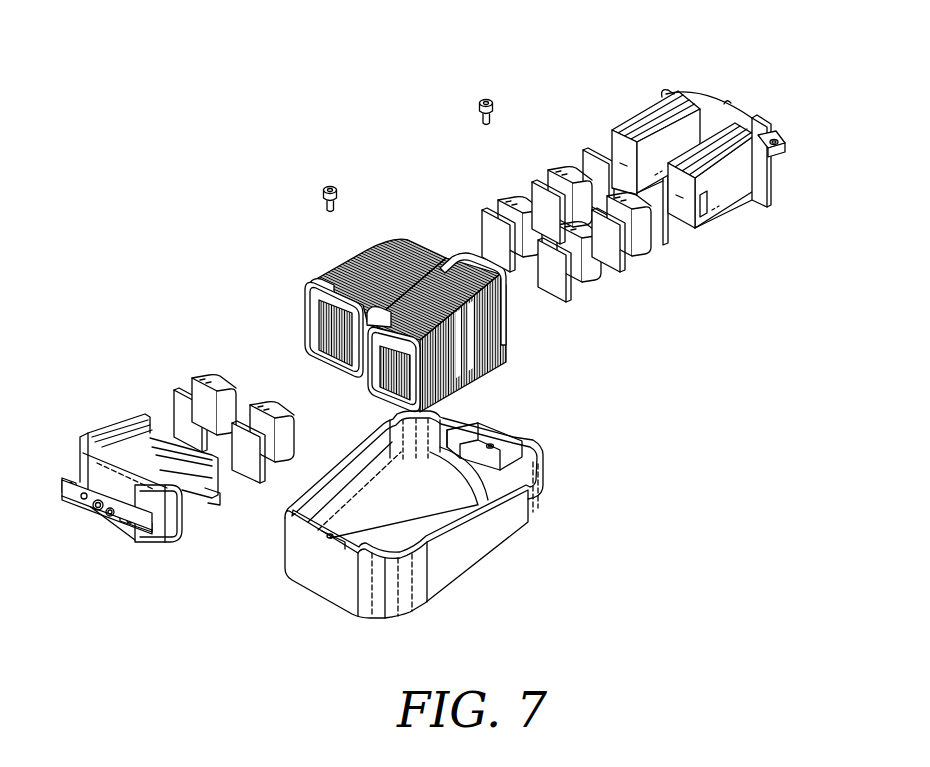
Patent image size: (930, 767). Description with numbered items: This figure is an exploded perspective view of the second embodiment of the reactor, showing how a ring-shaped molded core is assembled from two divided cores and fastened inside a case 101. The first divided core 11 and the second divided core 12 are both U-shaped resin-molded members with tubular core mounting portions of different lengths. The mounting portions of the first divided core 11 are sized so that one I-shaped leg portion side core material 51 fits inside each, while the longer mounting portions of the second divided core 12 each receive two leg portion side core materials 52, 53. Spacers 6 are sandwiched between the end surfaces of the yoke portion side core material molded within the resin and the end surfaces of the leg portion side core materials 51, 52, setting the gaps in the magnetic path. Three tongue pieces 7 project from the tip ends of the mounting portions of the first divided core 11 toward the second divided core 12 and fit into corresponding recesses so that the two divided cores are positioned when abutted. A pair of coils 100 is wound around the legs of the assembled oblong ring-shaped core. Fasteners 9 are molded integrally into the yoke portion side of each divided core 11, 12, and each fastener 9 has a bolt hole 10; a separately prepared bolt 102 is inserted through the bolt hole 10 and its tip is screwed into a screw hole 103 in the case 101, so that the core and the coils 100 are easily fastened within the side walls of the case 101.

The spacer 6 is at (597, 150).
The tongue piece 7 is at (140, 415).
The fastener 9 is at (772, 127).
The bolt hole 10 is at (96, 511).
The first divided core 11 is at (110, 432).
The second divided core 12 is at (667, 92).
The leg portion side core material 51 is at (210, 378).
The leg portion side core material 52 is at (556, 168).
The leg portion side core material 53 is at (505, 205).
The coil 100 is at (505, 350).
The case 101 is at (494, 544).
The bolt 102 is at (480, 106).
The screw hole 103 is at (500, 446).